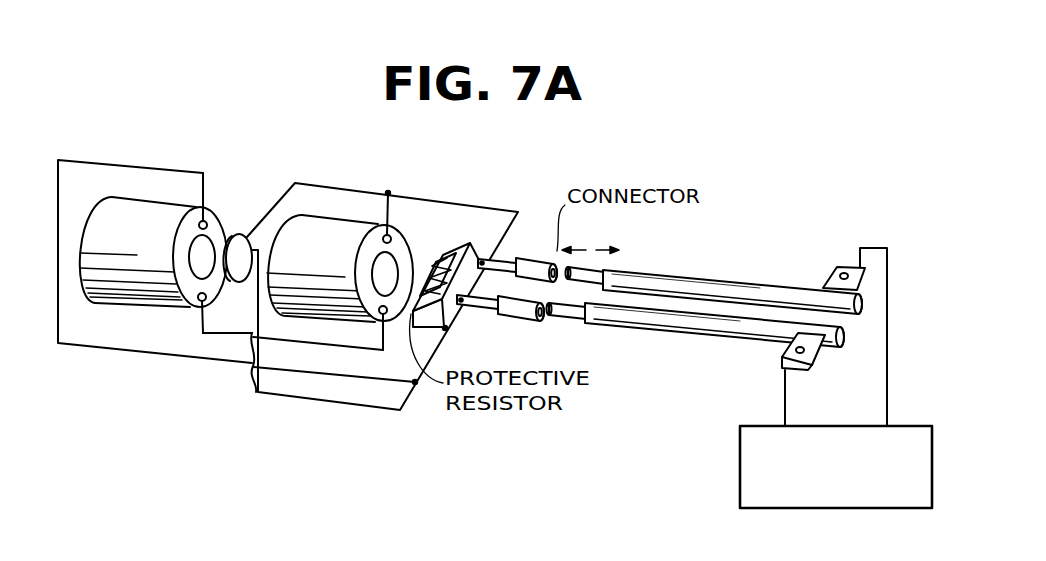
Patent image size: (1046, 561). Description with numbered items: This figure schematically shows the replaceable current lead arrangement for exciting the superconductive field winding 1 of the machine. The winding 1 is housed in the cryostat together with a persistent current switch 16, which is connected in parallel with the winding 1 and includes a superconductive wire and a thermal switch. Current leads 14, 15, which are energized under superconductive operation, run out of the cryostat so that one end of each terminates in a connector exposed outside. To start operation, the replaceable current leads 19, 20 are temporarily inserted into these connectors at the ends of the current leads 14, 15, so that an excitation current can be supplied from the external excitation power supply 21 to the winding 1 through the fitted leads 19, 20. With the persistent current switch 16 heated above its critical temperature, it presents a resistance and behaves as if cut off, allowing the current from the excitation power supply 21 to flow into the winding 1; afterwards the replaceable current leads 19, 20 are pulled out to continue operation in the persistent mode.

The superconductive field winding 1 is at (283, 231).
The current lead 14 is at (492, 256).
The current lead 15 is at (457, 303).
The persistent current switch 16 is at (238, 282).
The replaceable current lead 19 is at (732, 284).
The replaceable current lead 20 is at (697, 331).
The excitation power supply 21 is at (825, 424).